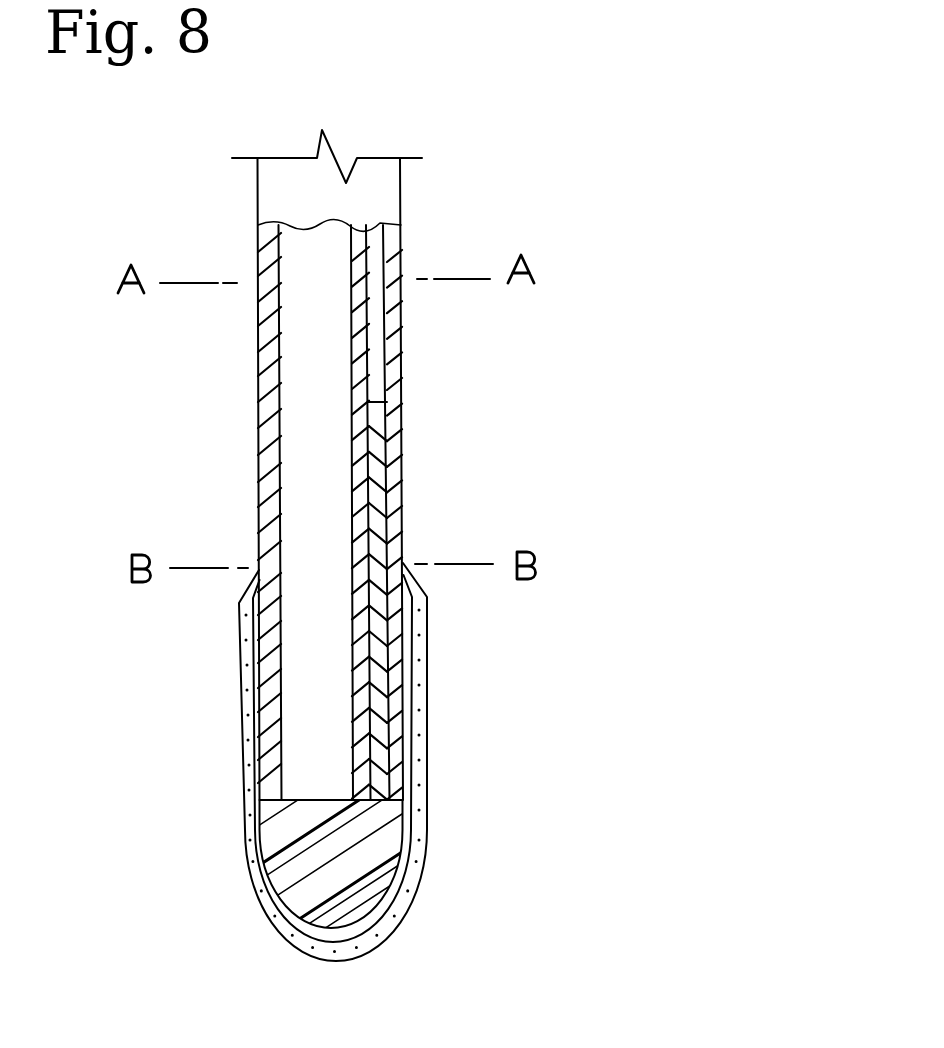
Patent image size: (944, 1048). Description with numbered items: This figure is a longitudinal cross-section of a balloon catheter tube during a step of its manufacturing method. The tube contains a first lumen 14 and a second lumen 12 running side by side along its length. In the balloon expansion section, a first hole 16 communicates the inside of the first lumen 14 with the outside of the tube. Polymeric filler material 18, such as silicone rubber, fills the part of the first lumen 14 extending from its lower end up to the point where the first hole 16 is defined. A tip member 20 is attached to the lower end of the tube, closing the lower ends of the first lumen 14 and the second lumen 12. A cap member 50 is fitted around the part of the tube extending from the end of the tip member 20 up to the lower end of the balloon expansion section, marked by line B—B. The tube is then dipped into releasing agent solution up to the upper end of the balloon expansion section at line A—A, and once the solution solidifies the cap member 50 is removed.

The second lumen 12 is at (289, 465).
The first lumen 14 is at (422, 512).
The first hole 16 is at (432, 391).
The polymeric filler material 18 is at (431, 612).
The tip member 20 is at (270, 852).
The cap member 50 is at (389, 762).